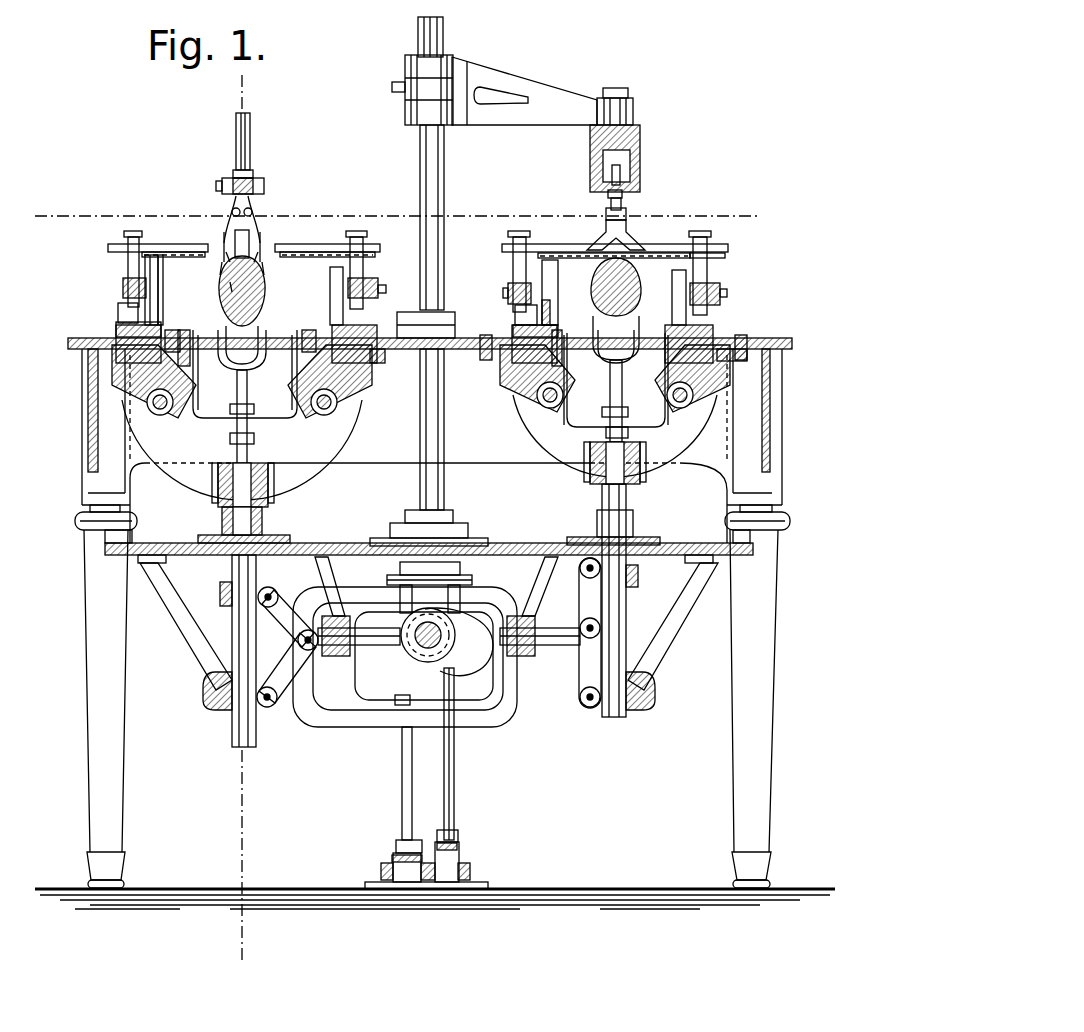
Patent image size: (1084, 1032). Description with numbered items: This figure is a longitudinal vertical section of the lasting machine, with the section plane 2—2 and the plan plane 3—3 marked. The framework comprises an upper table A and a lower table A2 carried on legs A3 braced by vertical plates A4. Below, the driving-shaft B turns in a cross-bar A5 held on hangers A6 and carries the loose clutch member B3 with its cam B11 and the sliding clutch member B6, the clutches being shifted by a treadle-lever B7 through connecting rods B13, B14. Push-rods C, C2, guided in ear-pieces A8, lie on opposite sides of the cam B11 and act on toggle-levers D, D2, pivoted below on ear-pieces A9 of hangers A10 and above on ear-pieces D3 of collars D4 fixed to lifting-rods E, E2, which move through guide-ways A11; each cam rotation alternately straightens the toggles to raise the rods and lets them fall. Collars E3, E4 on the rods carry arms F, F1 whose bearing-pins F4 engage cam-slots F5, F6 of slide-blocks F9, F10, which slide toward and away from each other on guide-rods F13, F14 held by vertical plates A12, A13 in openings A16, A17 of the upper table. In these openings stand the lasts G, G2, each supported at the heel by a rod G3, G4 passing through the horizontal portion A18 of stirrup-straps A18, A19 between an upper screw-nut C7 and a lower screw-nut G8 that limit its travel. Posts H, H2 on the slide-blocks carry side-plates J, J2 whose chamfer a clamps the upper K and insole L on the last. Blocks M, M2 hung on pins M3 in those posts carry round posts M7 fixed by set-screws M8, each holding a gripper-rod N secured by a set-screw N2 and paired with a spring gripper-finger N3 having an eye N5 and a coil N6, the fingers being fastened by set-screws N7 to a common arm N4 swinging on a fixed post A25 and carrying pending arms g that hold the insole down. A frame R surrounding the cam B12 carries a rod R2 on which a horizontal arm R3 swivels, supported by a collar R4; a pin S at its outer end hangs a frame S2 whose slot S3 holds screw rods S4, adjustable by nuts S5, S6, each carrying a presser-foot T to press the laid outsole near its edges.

The section line 2— 2 is at (300, 88).
The section line 3— 3 is at (400, 221).
The upper table A is at (68, 344).
The lower table A2 is at (178, 543).
The legs A3 is at (128, 685).
The plates A4 is at (82, 426).
The cross-bar A5 is at (356, 650).
The hangers A6 is at (324, 585).
The ear-piece A8 is at (332, 660).
The ear-pieces A9 is at (273, 704).
The hangers A10 is at (190, 640).
The guide-ways A11 is at (232, 557).
The vertical plate A12 is at (120, 340).
The vertical plate A13 is at (374, 335).
The opening A16 is at (246, 372).
The opening A17 is at (617, 371).
The stirrup-strap A18 is at (232, 409).
The stirrup-strap A19 is at (196, 381).
The fixed post A25 is at (250, 146).
The driving-shaft B is at (442, 637).
The loose clutch member B3 is at (446, 650).
The sliding clutch member B6 is at (398, 858).
The treadle-lever B7 is at (460, 848).
The cam B11 is at (463, 667).
The cam B12 is at (412, 688).
The connecting rod B13 is at (455, 778).
The connecting rod B14 is at (402, 777).
The push-rod C is at (372, 642).
The push-rod C2 is at (547, 647).
The screw-nut C7 is at (262, 452).
The toggle-lever D is at (302, 655).
The toggle-lever D2 is at (579, 666).
The ear-pieces D3 is at (276, 594).
The collars D4 is at (220, 596).
The lifting-rod E is at (256, 646).
The lifting-rod E2 is at (626, 613).
The fixed collar E3 is at (270, 490).
The fixed collar E4 is at (590, 480).
The arm F is at (204, 472).
The arm F1 is at (306, 458).
The bearing-pins F4 is at (154, 420).
The cam-slot F5 is at (150, 405).
The cam-slot F6 is at (334, 402).
The slide-block F9 is at (118, 352).
The slide-block F10 is at (742, 348).
The guide-rod F13 is at (176, 330).
The guide-rod F14 is at (310, 332).
The last G is at (640, 284).
The last G2 is at (264, 288).
The last-supporting rod G3 is at (250, 386).
The last-supporting rod G4 is at (610, 389).
The screw-nut G8 is at (232, 450).
The post H is at (163, 304).
The post H2 is at (672, 276).
The side-plate J is at (176, 252).
The side-plate J2 is at (314, 252).
The upper K is at (234, 266).
The insole L is at (230, 287).
The rectangular block M is at (123, 285).
The rectangular block M2 is at (378, 286).
The horizontal pins M3 is at (163, 294).
The round vertical posts M7 is at (128, 264).
The set-screws M8 is at (382, 292).
The horizontal rod N is at (108, 249).
The set-screw N2 is at (138, 232).
The spring gripper-finger N3 is at (227, 240).
The horizontal arm N4 is at (260, 188).
The eye N5 is at (222, 240).
The coil N6 is at (260, 213).
The set-screw N7 is at (220, 186).
The vertical rectangular frame R is at (502, 720).
The vertical rod R2 is at (444, 482).
The horizontal arm R3 is at (504, 125).
The collar R4 is at (400, 90).
The vertical pin S is at (618, 95).
The frame S2 is at (641, 160).
The slot S3 is at (606, 195).
The screw rods S4 is at (628, 211).
The upper screw-nut S5 is at (610, 177).
The lower screw-nut S6 is at (611, 206).
The presser-foot T is at (632, 236).
The under chamfer a is at (224, 258).
The pending arms g is at (236, 166).